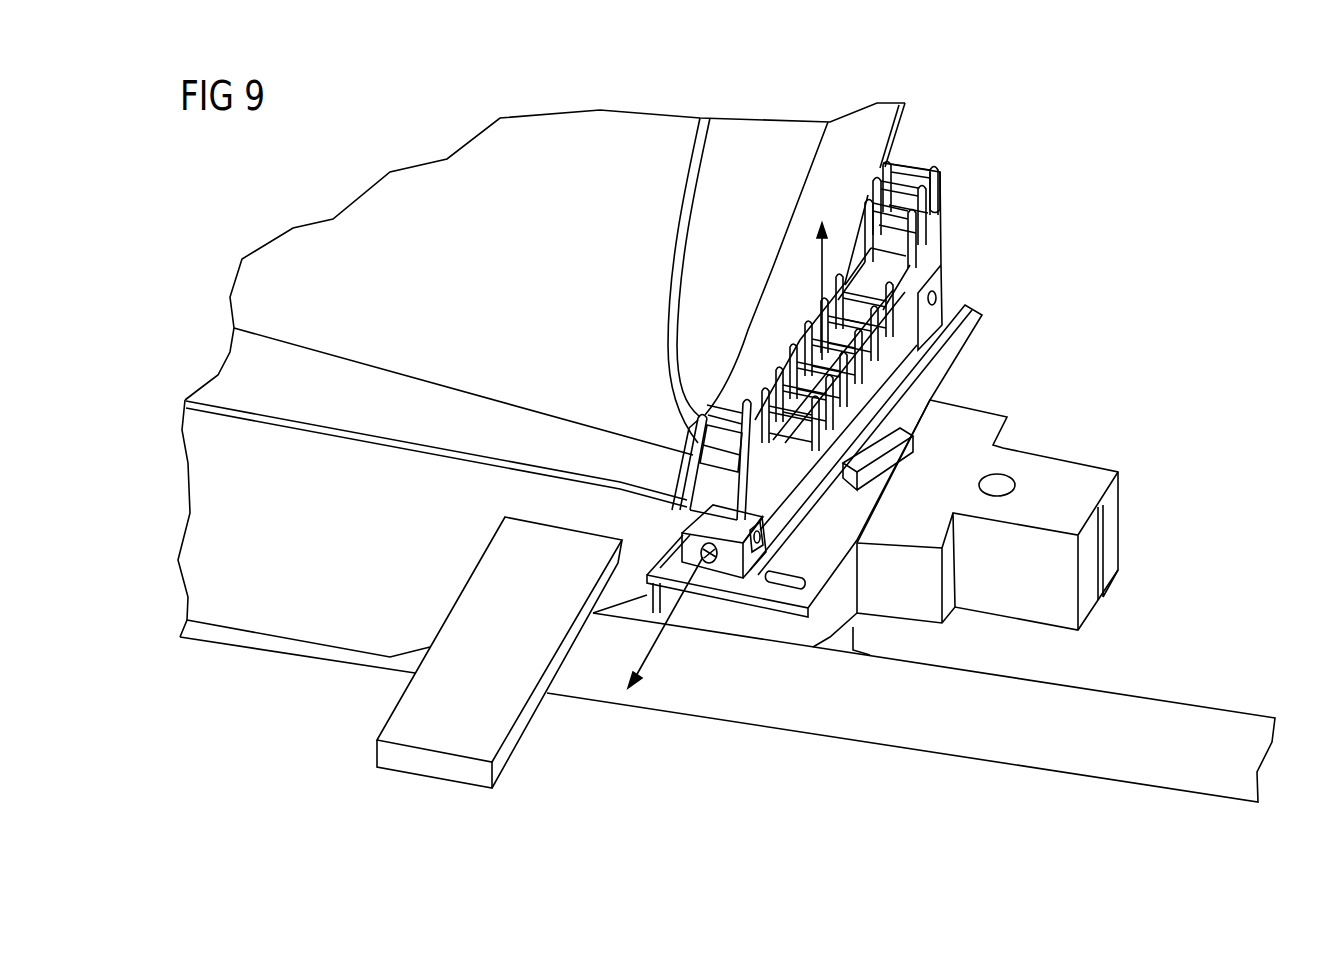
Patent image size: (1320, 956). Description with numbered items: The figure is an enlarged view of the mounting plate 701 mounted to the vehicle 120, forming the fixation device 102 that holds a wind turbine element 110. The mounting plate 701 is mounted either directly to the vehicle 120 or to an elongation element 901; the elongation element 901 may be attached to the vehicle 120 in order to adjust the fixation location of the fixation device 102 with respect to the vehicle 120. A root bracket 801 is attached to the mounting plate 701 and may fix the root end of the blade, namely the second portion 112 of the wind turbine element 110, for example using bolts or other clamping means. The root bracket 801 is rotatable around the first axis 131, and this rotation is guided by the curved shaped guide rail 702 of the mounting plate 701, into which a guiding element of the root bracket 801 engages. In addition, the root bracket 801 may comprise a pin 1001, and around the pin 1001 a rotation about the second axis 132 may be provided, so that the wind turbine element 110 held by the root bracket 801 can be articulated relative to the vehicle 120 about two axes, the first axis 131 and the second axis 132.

The fixation device 102 is at (963, 188).
The wind turbine element 110 is at (305, 238).
The second portion 112 is at (672, 145).
The vehicle 120 is at (280, 620).
The first axis 131 is at (818, 262).
The second axis 132 is at (643, 667).
The mounting plate 701 is at (968, 315).
The curved shaped guide rail 702 is at (795, 567).
The root bracket 801 is at (933, 235).
The elongation element 901 is at (1087, 473).
The pin 1001 is at (710, 562).